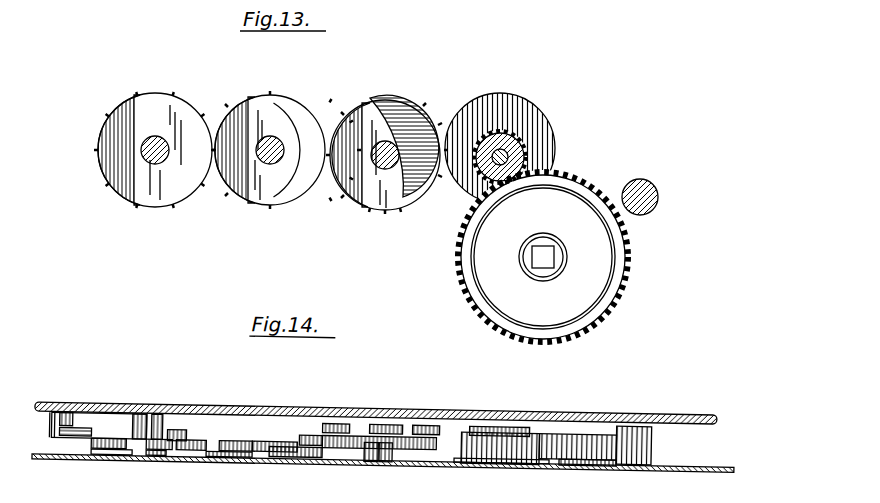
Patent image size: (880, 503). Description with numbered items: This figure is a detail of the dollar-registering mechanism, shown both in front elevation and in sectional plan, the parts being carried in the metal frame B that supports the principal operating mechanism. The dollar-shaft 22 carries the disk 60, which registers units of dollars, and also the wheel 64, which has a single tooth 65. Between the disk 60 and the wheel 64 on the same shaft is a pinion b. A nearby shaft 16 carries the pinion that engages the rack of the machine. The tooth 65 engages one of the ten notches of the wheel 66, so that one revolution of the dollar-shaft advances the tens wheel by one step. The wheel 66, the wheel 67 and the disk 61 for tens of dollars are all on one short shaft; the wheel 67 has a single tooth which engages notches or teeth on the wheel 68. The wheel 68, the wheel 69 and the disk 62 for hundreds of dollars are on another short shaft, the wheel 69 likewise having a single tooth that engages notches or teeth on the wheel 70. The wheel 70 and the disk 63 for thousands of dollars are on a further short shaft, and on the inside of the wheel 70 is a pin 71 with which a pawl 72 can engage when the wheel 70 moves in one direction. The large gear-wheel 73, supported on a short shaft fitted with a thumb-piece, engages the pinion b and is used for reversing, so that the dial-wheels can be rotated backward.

In FIG. 13, the shaft 16 is at (652, 189).
In FIG. 13, the dollar-shaft 22 is at (517, 140).
In FIG. 13, the pinion b is at (527, 155).
In FIG. 14, the pinion b is at (488, 453).
In FIG. 14, the disk 60 is at (505, 459).
In FIG. 14, the disk 61 is at (389, 457).
In FIG. 14, the disk 62 is at (246, 453).
In FIG. 14, the disk 63 is at (130, 455).
In FIG. 13, the wheel 64 is at (502, 108).
In FIG. 14, the wheel 64 is at (497, 424).
In FIG. 13, the single tooth 65 is at (458, 186).
In FIG. 13, the wheel 66 is at (420, 124).
In FIG. 14, the wheel 66 is at (389, 430).
In FIG. 13, the wheel 67 is at (383, 157).
In FIG. 14, the wheel 67 is at (369, 455).
In FIG. 13, the wheel 68 is at (304, 120).
In FIG. 14, the wheel 68 is at (262, 450).
In FIG. 13, the wheel 69 is at (268, 150).
In FIG. 14, the wheel 69 is at (291, 441).
In FIG. 13, the wheel 70 is at (155, 150).
In FIG. 14, the wheel 70 is at (164, 453).
In FIG. 14, the pin 71 is at (179, 427).
In FIG. 14, the pawl 72 is at (106, 428).
In FIG. 13, the gear-wheel 73 is at (543, 257).
In FIG. 14, the gear-wheel 73 is at (588, 446).
In FIG. 14, the metal frame B is at (641, 402).